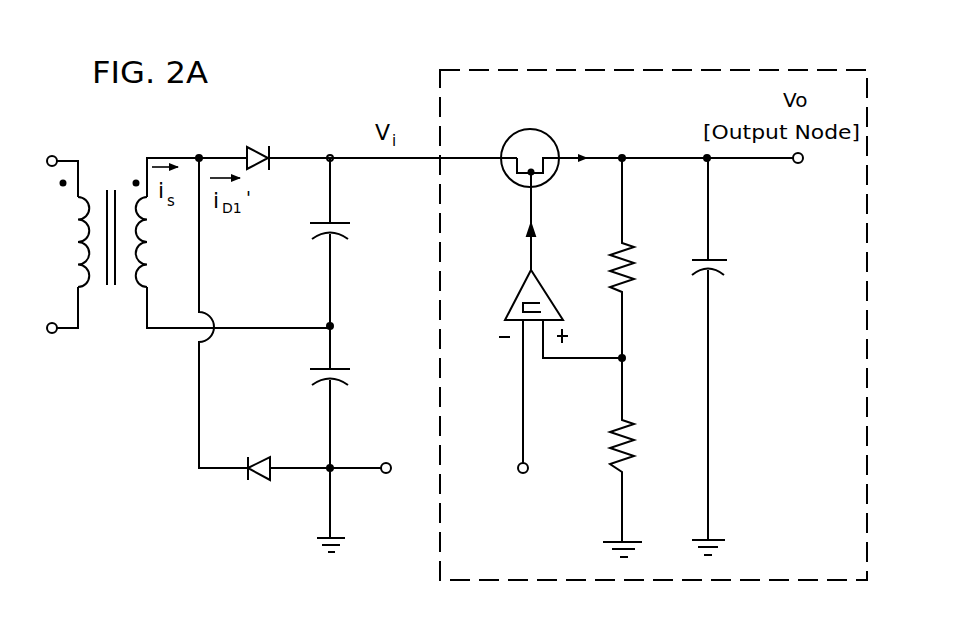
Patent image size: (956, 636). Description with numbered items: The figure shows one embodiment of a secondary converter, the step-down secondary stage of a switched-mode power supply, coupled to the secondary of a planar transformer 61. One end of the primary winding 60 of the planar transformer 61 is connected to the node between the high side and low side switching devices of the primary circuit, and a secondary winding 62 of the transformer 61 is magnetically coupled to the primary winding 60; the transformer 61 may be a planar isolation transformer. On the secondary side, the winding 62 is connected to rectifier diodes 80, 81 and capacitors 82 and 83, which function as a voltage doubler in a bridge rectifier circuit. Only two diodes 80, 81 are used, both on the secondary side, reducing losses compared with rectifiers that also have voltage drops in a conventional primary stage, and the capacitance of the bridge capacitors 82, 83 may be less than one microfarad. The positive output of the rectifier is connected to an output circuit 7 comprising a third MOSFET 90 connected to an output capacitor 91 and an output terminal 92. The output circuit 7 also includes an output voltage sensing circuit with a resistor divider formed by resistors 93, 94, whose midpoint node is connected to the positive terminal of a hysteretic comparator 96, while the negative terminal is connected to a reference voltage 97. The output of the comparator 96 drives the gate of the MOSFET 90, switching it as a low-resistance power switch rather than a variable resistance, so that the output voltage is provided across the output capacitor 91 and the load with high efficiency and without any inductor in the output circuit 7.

The output circuit 7 is at (632, 68).
The primary winding 60 is at (73, 255).
The planar transformer 61 is at (176, 227).
The secondary winding 62 is at (148, 262).
The rectifier diode 80 is at (262, 133).
The rectifier diode 81 is at (260, 488).
The capacitor 82 is at (305, 236).
The capacitor 83 is at (308, 380).
The MOSFET 90 is at (508, 182).
The output capacitor 91 is at (730, 272).
The output terminal 92 is at (802, 167).
The resistor 93 is at (613, 255).
The resistor 94 is at (618, 453).
The hysteretic comparator 96 is at (520, 288).
The reference voltage 97 is at (518, 463).